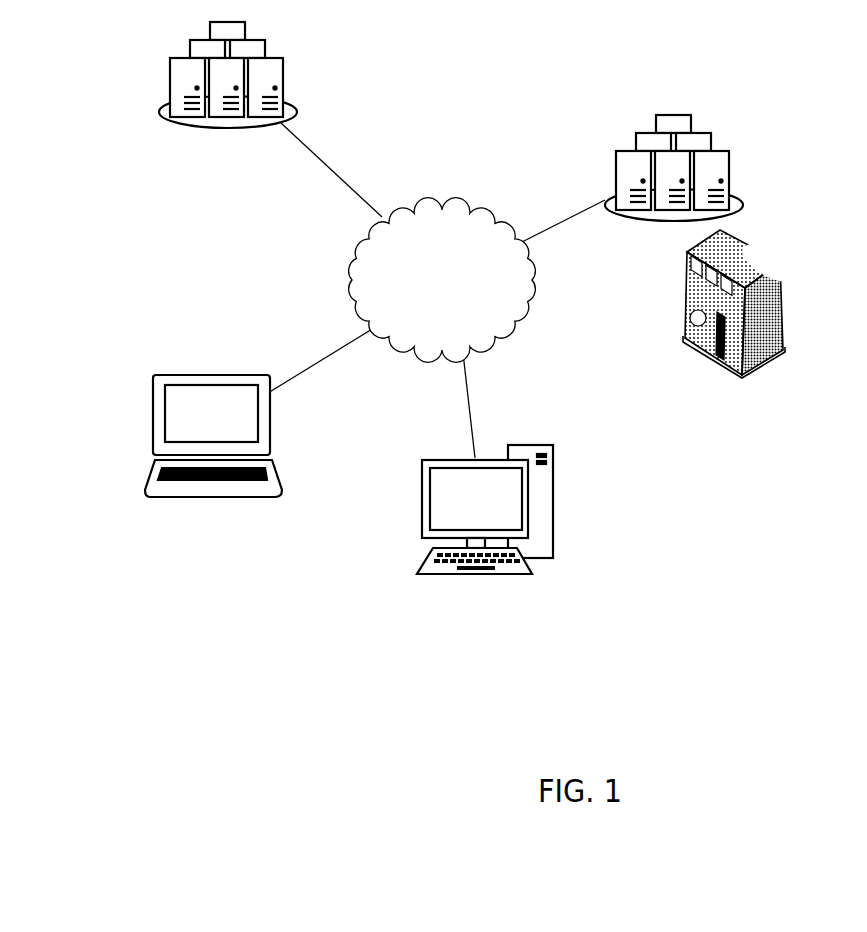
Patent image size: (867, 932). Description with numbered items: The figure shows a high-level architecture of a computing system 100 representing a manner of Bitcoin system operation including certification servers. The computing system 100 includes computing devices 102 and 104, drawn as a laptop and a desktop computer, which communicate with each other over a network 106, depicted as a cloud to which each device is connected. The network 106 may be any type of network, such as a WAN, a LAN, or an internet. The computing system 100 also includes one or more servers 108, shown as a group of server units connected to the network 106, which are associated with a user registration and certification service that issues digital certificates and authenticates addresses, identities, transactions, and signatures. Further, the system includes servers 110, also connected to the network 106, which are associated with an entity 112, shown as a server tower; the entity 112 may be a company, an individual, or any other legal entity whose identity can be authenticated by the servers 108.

The computing system 100 is at (90, 55).
The computing device 102 is at (178, 497).
The computing device 104 is at (420, 510).
The network 106 is at (455, 291).
The servers 108 is at (230, 130).
The servers 110 is at (616, 167).
The entity 112 is at (735, 377).